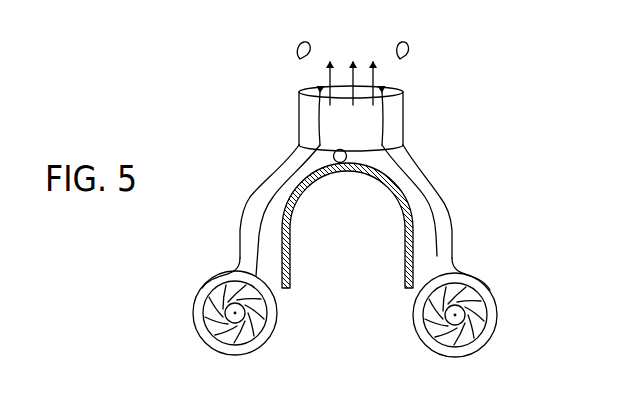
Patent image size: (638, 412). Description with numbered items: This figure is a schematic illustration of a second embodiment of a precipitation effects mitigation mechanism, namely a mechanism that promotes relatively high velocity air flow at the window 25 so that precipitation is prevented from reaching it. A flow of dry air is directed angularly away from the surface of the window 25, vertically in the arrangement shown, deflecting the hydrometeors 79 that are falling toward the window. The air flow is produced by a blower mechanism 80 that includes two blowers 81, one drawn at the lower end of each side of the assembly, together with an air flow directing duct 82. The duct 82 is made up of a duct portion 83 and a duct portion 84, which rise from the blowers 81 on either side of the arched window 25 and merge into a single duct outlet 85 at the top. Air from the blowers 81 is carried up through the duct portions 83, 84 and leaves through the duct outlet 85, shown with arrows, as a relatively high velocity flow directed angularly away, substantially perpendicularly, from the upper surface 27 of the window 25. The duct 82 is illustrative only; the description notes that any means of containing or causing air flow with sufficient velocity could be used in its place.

The window 25 is at (407, 283).
The upper surface 27 is at (339, 163).
The hydrometeors 79 is at (300, 63).
The blower mechanism 80 is at (233, 236).
The blowers 81 is at (222, 303).
The air flow directing duct 82 is at (446, 222).
The duct portion 83 is at (455, 248).
The duct portion 84 is at (246, 212).
The duct outlet 85 is at (405, 131).